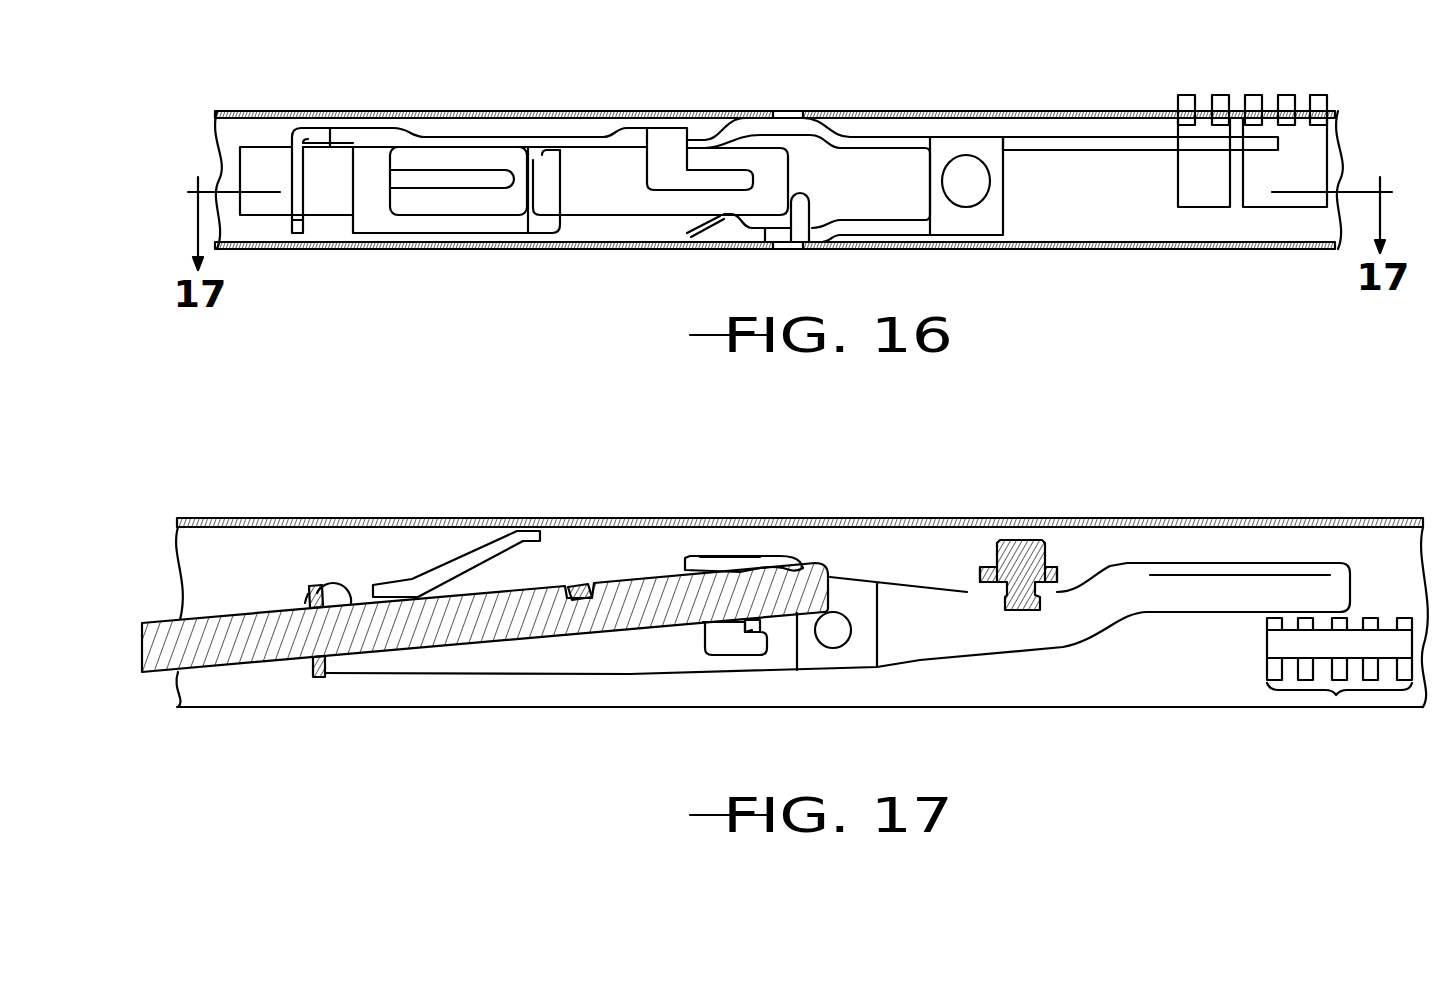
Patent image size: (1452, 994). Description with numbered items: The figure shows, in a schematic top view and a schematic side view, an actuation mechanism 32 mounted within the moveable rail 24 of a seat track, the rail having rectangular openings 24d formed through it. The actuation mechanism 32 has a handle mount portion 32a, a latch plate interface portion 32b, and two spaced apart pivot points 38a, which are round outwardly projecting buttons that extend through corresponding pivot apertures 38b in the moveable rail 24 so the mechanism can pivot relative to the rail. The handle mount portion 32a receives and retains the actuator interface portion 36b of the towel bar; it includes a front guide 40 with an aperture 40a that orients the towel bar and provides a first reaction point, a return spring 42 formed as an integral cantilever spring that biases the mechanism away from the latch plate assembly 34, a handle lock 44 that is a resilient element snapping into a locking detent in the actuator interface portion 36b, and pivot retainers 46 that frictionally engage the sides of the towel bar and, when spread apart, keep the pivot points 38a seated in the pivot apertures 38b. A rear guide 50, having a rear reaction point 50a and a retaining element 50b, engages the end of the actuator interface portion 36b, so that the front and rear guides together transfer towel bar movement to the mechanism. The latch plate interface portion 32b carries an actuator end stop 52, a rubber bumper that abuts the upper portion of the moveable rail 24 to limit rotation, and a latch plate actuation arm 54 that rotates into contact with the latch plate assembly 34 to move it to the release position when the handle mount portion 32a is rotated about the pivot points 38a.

In FIG. 16, the moveable rail 24 is at (1350, 114).
In FIG. 17, the moveable rail 24 is at (1392, 518).
In FIG. 17, the openings 24d is at (1334, 697).
In FIG. 16, the actuation mechanism 32 is at (590, 128).
In FIG. 17, the handle mount portion 32a is at (596, 685).
In FIG. 16, the latch plate interface portion 32b is at (1048, 132).
In FIG. 17, the latch plate interface portion 32b is at (1160, 556).
In FIG. 16, the latch plate assembly 34 is at (1246, 80).
In FIG. 17, the latch plate assembly 34 is at (1390, 648).
In FIG. 16, the actuator interface portion 36b is at (598, 200).
In FIG. 17, the actuator interface portion 36b is at (504, 655).
In FIG. 16, the pivot points 38a is at (786, 110).
In FIG. 17, the pivot points 38a is at (838, 632).
In FIG. 16, the pivot apertures 38b is at (805, 112).
In FIG. 16, the front guide 40 is at (296, 222).
In FIG. 17, the front guide 40 is at (336, 578).
In FIG. 17, the aperture 40a is at (306, 604).
In FIG. 16, the return spring 42 is at (433, 185).
In FIG. 17, the return spring 42 is at (463, 545).
In FIG. 16, the handle lock 44 is at (560, 150).
In FIG. 17, the handle lock 44 is at (546, 588).
In FIG. 16, the pivot retainers 46 is at (727, 133).
In FIG. 17, the pivot retainers 46 is at (793, 634).
In FIG. 16, the rear guide 50 is at (668, 137).
In FIG. 17, the rear guide 50 is at (764, 548).
In FIG. 17, the rear reaction point 50a is at (750, 631).
In FIG. 17, the retaining element 50b is at (714, 556).
In FIG. 16, the actuator end stop 52 is at (1002, 183).
In FIG. 17, the actuator end stop 52 is at (1052, 556).
In FIG. 16, the latch plate actuation arm 54 is at (1120, 140).
In FIG. 17, the latch plate actuation arm 54 is at (1267, 583).